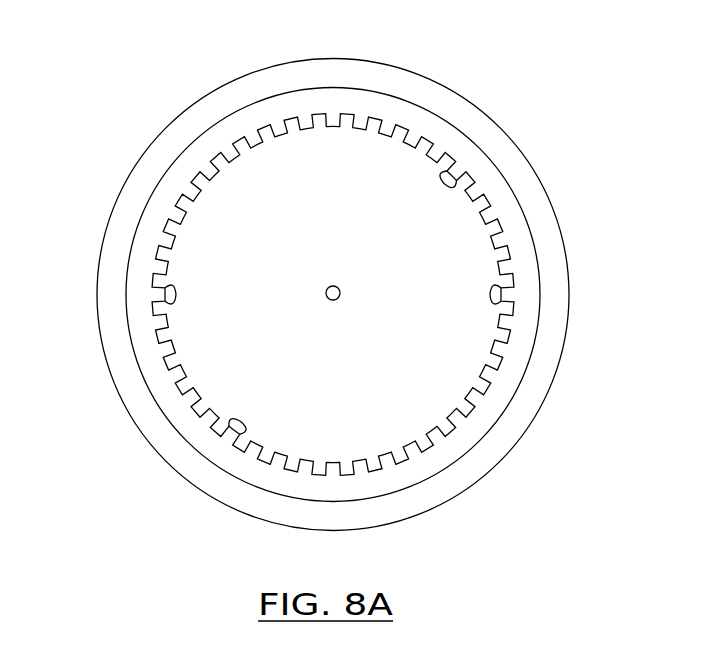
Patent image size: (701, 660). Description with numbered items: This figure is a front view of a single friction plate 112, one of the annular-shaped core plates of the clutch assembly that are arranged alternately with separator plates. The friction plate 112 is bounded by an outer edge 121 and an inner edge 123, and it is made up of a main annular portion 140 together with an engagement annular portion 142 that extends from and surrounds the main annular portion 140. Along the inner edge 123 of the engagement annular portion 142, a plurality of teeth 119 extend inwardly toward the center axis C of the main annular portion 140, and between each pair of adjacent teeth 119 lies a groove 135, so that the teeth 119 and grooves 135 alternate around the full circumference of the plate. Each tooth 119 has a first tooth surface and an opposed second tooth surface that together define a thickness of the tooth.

The friction plate 112 is at (542, 91).
The tooth 119 is at (463, 184).
The outer edge 121 is at (522, 448).
The inner edge 123 is at (356, 438).
The groove 135 is at (170, 376).
The main annular portion 140 is at (153, 428).
The engagement annular portion 142 is at (138, 272).